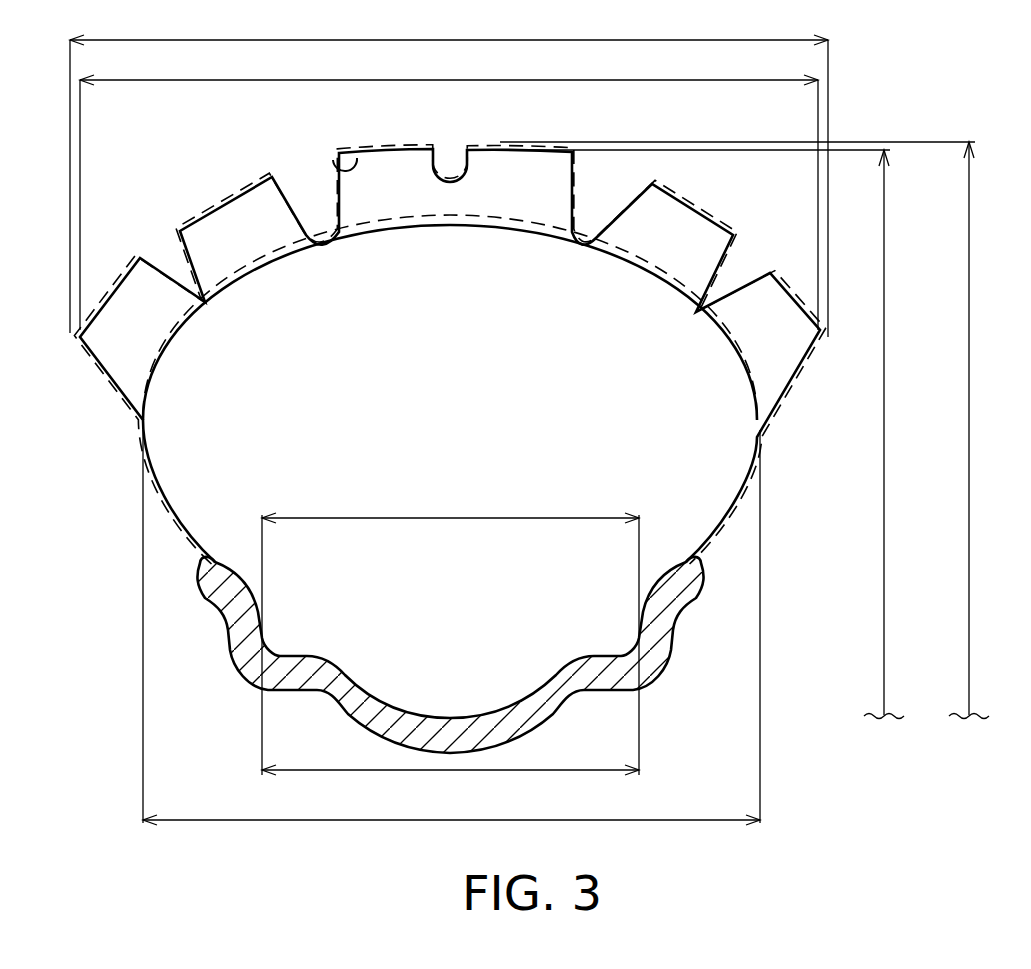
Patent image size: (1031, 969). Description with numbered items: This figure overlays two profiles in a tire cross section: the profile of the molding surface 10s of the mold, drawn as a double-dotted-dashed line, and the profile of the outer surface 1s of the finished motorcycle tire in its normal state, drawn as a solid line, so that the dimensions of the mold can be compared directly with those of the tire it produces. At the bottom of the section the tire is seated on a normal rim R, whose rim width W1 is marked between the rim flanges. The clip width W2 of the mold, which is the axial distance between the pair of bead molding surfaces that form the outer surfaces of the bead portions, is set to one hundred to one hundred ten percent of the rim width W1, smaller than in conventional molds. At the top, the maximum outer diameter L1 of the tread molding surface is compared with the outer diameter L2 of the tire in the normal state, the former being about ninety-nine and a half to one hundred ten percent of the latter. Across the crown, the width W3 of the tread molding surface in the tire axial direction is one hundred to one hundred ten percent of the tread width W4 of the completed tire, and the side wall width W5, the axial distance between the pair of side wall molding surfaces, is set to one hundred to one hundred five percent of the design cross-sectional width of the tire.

The molding surface 10s is at (330, 162).
The outer surface 1s is at (393, 150).
The normal rim R is at (245, 623).
The rim width W1 is at (450, 629).
The clip width W2 is at (450, 785).
The width of the tread molding surface W3 is at (449, 172).
The tread width W4 is at (449, 189).
The side wall width W5 is at (451, 642).
The maximum outer diameter of the tread molding surface L1 is at (754, 430).
The outer diameter of the tire L2 is at (711, 434).